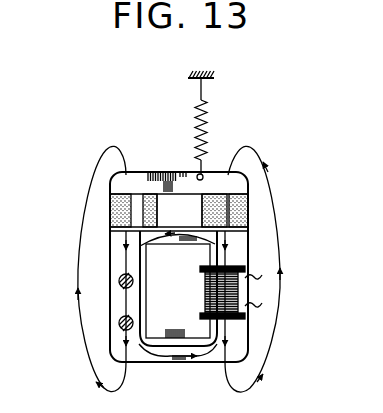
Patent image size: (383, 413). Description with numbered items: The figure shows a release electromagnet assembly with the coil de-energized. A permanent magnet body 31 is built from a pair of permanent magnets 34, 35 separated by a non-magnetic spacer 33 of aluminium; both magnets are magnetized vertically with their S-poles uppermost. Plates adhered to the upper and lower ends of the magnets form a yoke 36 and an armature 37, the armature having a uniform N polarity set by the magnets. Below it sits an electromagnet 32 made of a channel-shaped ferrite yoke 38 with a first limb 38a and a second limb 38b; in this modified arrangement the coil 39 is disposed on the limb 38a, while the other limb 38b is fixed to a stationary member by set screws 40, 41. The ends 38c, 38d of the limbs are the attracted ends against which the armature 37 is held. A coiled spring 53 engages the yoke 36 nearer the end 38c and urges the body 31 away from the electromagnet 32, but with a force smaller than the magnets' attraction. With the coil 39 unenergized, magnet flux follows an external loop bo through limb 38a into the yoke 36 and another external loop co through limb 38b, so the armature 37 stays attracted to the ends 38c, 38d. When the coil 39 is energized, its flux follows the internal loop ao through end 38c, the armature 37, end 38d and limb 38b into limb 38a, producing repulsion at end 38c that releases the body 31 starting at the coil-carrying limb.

The permanent magnet body 31 is at (99, 187).
The electromagnet 32 is at (101, 343).
The spacer 33 is at (183, 194).
The permanent magnet 34 is at (112, 212).
The permanent magnet 35 is at (252, 208).
The yoke 36 is at (214, 172).
The armature 37 is at (178, 291).
The channel-shaped yoke 38 is at (183, 360).
The first limb 38a is at (238, 326).
The second limb 38b is at (120, 258).
The attracted end 38c is at (238, 240).
The attracted end 38d is at (121, 239).
The coil 39 is at (213, 289).
The set screw 40 is at (119, 282).
The set screw 41 is at (119, 322).
The coiled spring 53 is at (195, 118).
The internal magnetic path loop ao is at (162, 360).
The external flux loop bo is at (279, 297).
The external flux loop co is at (77, 297).